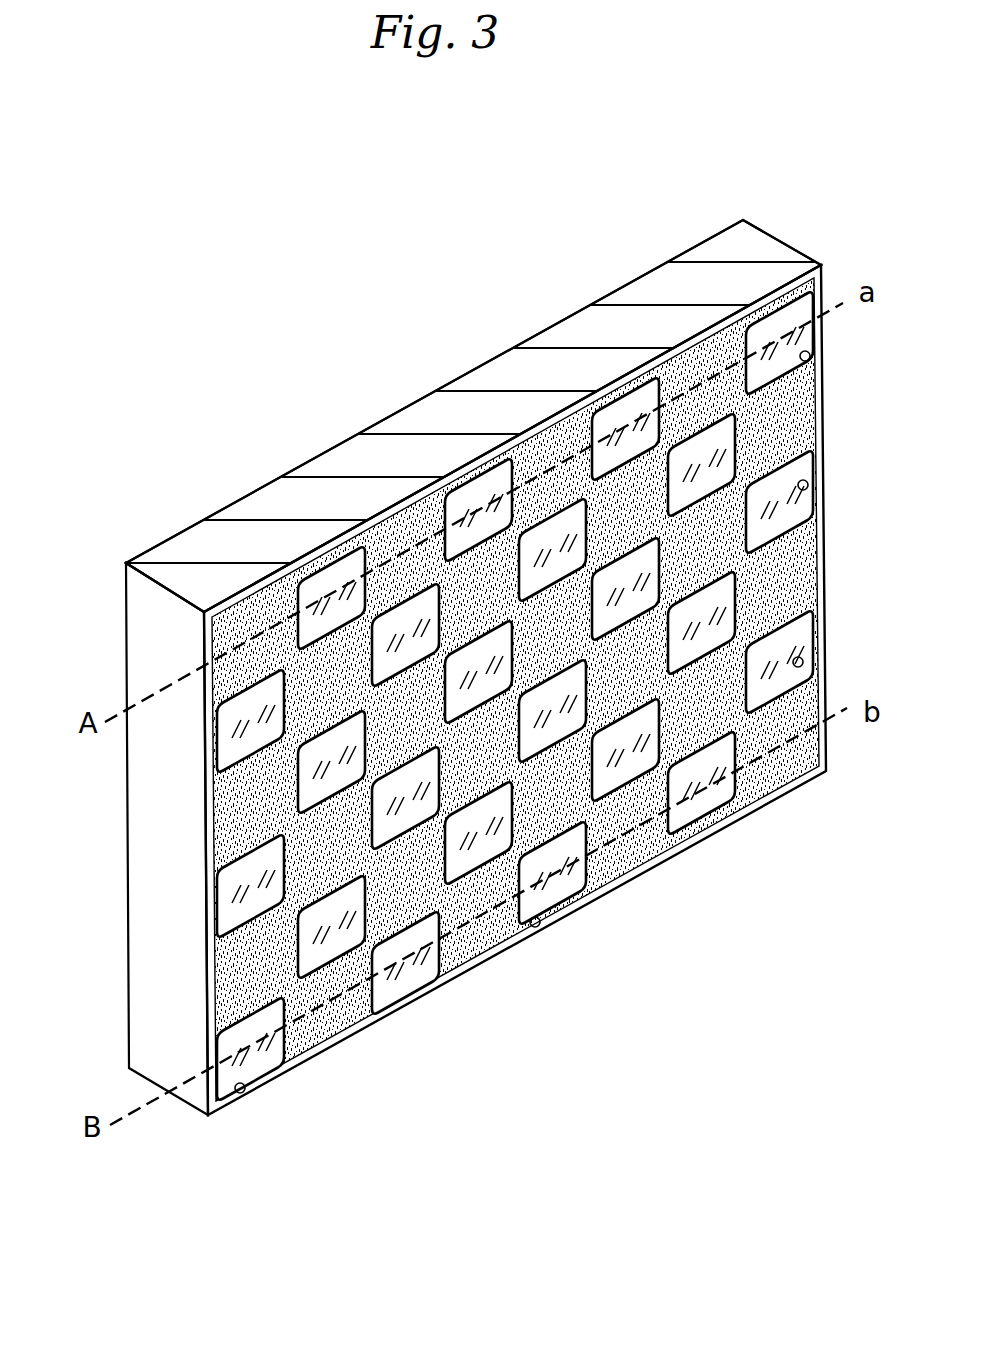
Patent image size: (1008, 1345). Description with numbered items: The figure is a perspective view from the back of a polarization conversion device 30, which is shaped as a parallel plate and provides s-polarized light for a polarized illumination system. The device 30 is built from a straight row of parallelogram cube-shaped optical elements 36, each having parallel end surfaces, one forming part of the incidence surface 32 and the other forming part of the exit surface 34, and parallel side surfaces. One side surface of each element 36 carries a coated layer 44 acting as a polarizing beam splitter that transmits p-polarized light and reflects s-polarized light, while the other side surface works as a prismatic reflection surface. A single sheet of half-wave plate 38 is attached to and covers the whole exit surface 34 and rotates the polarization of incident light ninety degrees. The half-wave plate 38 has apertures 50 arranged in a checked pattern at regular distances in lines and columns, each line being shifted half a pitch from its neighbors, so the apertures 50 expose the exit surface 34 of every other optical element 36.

The polarization conversion device 30 is at (357, 322).
The incidence surface 32 is at (467, 370).
The exit surface 34 is at (772, 368).
The parallelogram cube-shaped optical element 36 is at (655, 285).
The half-wave plate 38 is at (780, 787).
The coated layer 44 is at (612, 304).
The aperture 50 is at (808, 352).